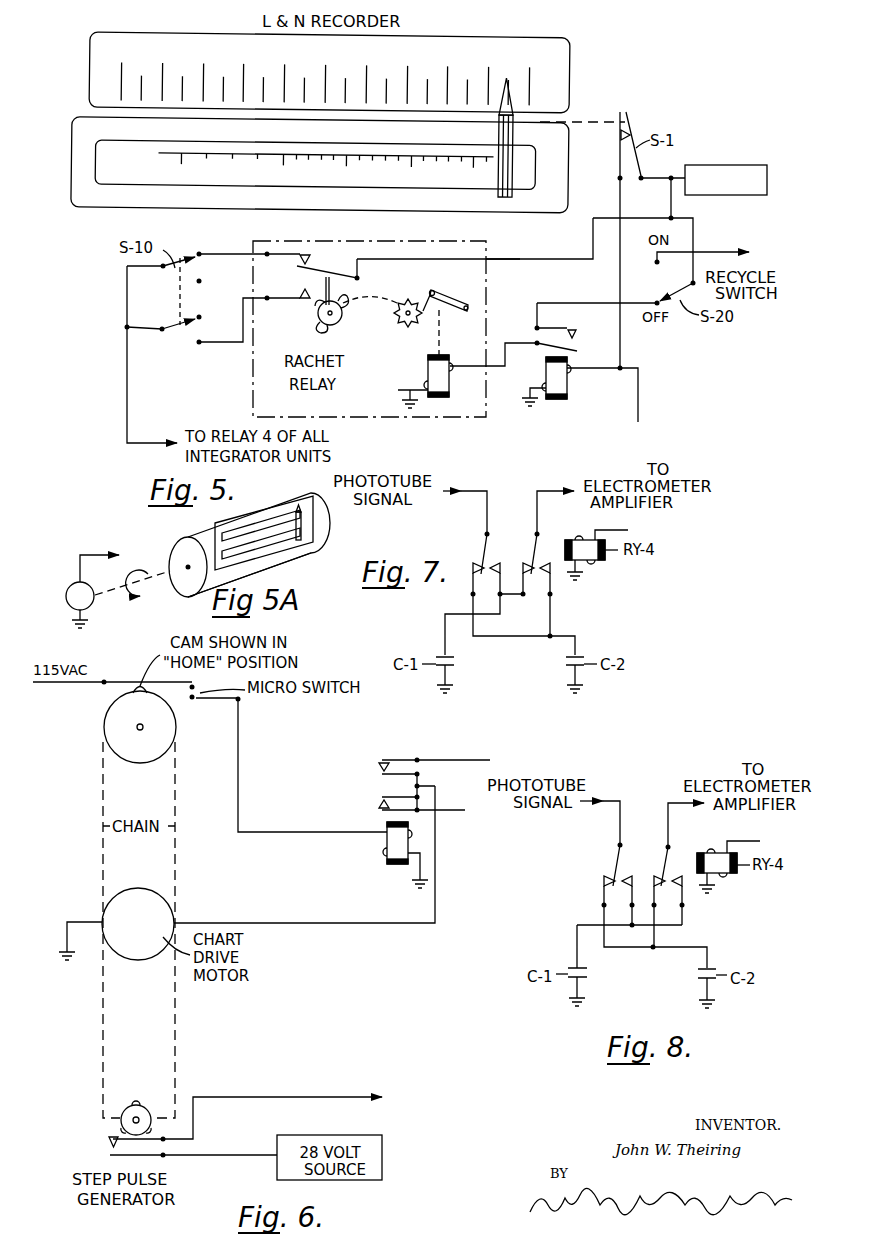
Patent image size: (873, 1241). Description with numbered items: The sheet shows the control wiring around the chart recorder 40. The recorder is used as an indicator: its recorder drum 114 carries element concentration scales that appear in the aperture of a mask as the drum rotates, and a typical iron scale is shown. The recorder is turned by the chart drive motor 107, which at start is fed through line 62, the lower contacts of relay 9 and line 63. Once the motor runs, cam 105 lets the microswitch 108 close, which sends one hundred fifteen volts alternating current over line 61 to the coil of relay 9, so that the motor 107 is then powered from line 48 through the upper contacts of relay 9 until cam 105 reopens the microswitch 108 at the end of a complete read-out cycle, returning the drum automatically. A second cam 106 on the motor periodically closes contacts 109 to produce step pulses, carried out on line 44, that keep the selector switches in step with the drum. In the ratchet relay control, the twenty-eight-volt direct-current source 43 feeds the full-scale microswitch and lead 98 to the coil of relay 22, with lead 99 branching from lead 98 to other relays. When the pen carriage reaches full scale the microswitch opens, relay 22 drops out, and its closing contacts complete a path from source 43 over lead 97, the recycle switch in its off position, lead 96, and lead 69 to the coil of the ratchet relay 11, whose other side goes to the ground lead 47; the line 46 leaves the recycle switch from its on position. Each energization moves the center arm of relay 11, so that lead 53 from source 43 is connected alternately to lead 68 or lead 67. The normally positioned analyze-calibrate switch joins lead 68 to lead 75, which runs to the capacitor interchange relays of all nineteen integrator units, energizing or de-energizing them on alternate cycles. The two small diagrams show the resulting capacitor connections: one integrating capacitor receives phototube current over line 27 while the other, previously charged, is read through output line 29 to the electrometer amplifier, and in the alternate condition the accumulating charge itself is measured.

In FIG. 5, the chart recorder 40 is at (588, 102).
In FIG. 5A, the chart recorder 40 is at (301, 568).
In FIG. 6, the chart recorder 40 is at (148, 1011).
In FIG. 5, the 28-volt D.C. source 43 is at (718, 163).
In FIG. 5, the output lead 46 is at (705, 250).
In FIG. 5, the lead 53 is at (527, 260).
In FIG. 5, the lead 68 is at (240, 254).
In FIG. 5, the lead 67 is at (205, 347).
In FIG. 5, the lead 75 is at (127, 385).
In FIG. 5, the lead 96 is at (590, 302).
In FIG. 5, the lead 97 is at (671, 200).
In FIG. 5, the lead 98 is at (620, 343).
In FIG. 5, the lead 99 is at (640, 395).
In FIG. 5, the lead 69 is at (527, 343).
In FIG. 5, the ground lead 47 is at (402, 393).
In FIG. 5, the ratchet relay 11 is at (442, 397).
In FIG. 5, the relay 22 is at (558, 398).
In FIG. 5A, the line 63 is at (82, 553).
In FIG. 6, the line 63 is at (330, 922).
In FIG. 5A, the recorder drum 114 is at (183, 548).
In FIG. 5A, the chart drive motor 107 is at (70, 585).
In FIG. 6, the chart drive motor 107 is at (150, 888).
In FIG. 7, the line 27 is at (465, 489).
In FIG. 8, the line 27 is at (620, 823).
In FIG. 7, the output line 29 is at (565, 490).
In FIG. 8, the output line 29 is at (672, 826).
In FIG. 6, the cam 105 is at (165, 733).
In FIG. 6, the microswitch 108 is at (196, 700).
In FIG. 6, the line 61 is at (330, 832).
In FIG. 6, the relay 9 is at (387, 856).
In FIG. 6, the line 62 is at (445, 812).
In FIG. 6, the line 48 is at (443, 762).
In FIG. 6, the cam 106 is at (146, 1105).
In FIG. 6, the contacts 109 is at (108, 1145).
In FIG. 6, the output lead 44 is at (315, 1097).